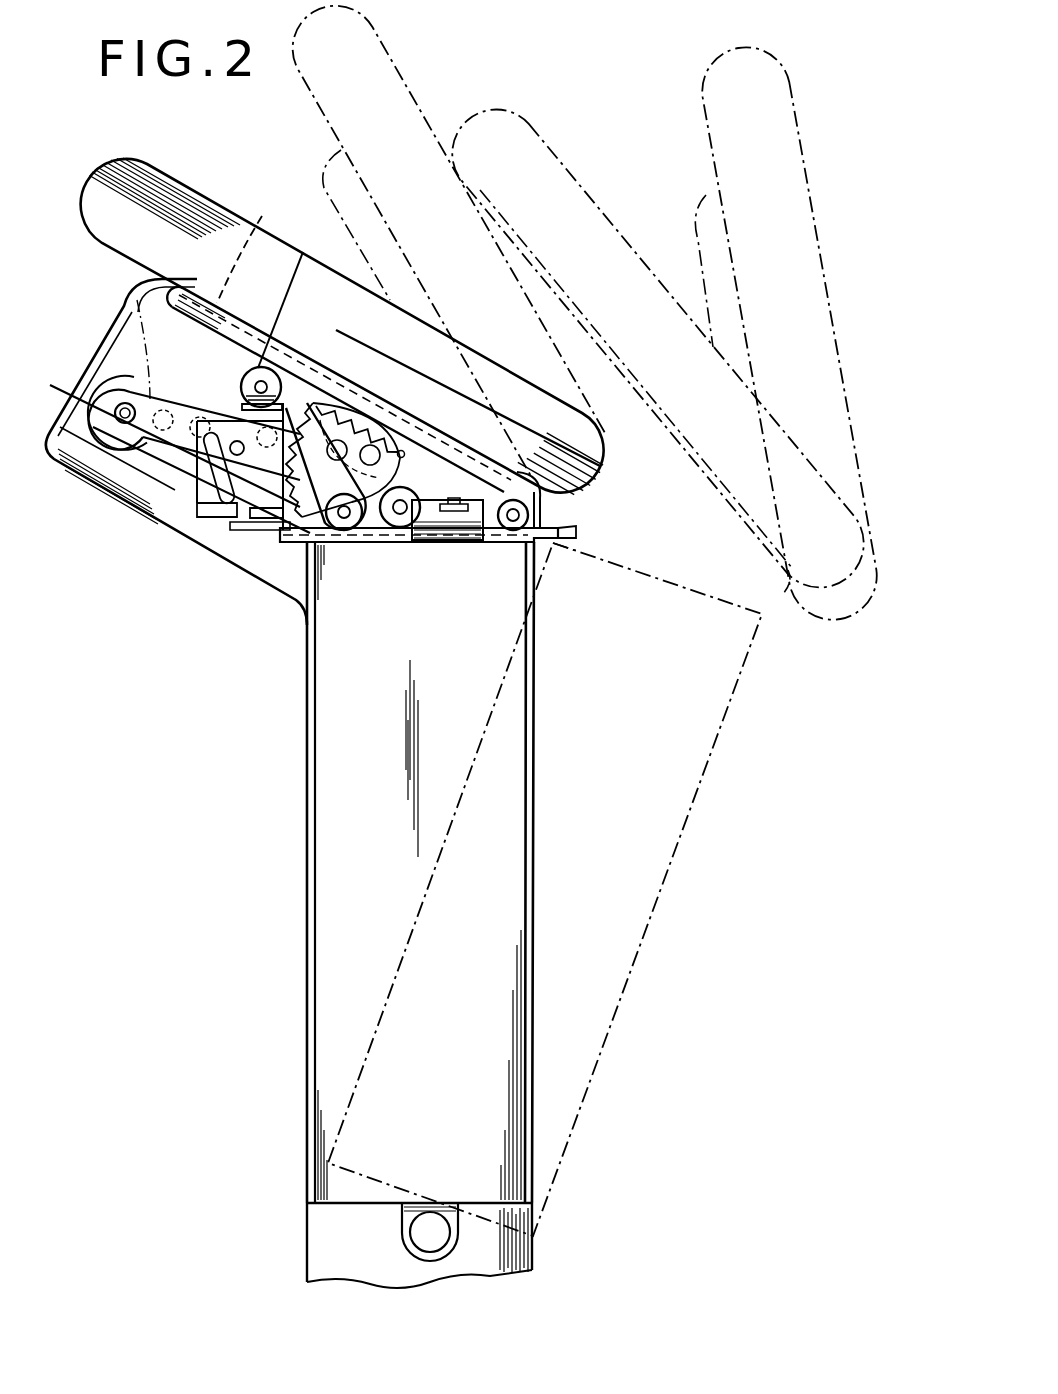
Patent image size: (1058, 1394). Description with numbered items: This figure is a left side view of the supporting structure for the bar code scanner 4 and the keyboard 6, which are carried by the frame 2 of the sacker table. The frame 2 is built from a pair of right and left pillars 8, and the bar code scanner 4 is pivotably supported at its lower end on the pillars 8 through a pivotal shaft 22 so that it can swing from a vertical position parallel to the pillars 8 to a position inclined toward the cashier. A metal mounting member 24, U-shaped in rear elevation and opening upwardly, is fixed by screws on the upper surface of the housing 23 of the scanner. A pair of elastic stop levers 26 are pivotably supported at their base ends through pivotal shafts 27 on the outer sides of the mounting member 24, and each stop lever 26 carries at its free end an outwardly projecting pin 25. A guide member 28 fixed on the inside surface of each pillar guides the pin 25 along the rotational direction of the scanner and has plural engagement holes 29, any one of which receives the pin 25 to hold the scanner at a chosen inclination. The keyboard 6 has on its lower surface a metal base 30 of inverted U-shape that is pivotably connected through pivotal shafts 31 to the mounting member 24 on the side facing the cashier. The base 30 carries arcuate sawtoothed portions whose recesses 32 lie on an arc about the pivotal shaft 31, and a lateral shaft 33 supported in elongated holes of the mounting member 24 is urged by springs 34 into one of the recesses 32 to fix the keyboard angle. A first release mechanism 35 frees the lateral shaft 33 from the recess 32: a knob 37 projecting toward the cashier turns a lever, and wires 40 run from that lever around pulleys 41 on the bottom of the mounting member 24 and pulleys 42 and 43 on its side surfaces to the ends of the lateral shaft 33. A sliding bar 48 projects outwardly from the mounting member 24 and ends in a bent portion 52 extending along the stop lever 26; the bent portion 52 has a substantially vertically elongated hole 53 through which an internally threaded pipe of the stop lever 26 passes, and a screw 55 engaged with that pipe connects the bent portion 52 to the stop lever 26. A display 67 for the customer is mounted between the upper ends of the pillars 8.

The frame 2 is at (307, 1015).
The bar code scanner 4 is at (307, 775).
The keyboard 6 is at (194, 202).
The pillars 8 is at (307, 915).
The pivotal shaft 22 is at (410, 1233).
The housing 23 is at (307, 707).
The mounting member 24 is at (452, 440).
The pin 25 is at (126, 355).
The stop lever 26 is at (126, 424).
The pivotal shaft 27 is at (347, 537).
The guide member 28 is at (138, 305).
The engagement hole 29 is at (165, 432).
The base 30 is at (705, 195).
The pivotal shaft 31 is at (516, 498).
The recess 32 is at (290, 372).
The lateral shaft 33 is at (367, 432).
The spring 34 is at (372, 424).
The first release mechanism 35 is at (585, 530).
The knob 37 is at (564, 549).
The wire 40 is at (381, 541).
The pulley 41 is at (467, 541).
The pulley 42 is at (404, 541).
The pulley 43 is at (300, 256).
The sliding bar 48 is at (279, 546).
The bent portion 52 is at (212, 512).
The elongated hole 53 is at (247, 521).
The screw 55 is at (235, 457).
The display 67 is at (100, 440).